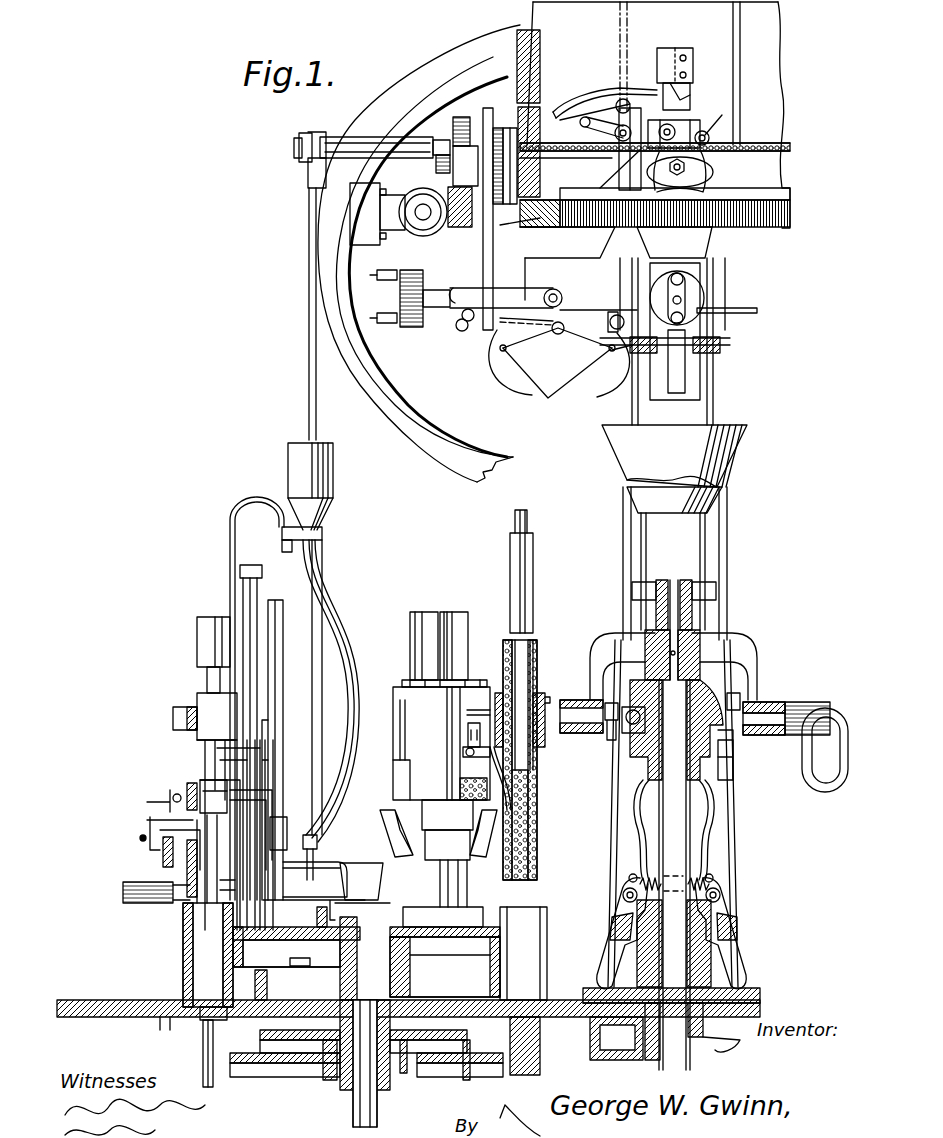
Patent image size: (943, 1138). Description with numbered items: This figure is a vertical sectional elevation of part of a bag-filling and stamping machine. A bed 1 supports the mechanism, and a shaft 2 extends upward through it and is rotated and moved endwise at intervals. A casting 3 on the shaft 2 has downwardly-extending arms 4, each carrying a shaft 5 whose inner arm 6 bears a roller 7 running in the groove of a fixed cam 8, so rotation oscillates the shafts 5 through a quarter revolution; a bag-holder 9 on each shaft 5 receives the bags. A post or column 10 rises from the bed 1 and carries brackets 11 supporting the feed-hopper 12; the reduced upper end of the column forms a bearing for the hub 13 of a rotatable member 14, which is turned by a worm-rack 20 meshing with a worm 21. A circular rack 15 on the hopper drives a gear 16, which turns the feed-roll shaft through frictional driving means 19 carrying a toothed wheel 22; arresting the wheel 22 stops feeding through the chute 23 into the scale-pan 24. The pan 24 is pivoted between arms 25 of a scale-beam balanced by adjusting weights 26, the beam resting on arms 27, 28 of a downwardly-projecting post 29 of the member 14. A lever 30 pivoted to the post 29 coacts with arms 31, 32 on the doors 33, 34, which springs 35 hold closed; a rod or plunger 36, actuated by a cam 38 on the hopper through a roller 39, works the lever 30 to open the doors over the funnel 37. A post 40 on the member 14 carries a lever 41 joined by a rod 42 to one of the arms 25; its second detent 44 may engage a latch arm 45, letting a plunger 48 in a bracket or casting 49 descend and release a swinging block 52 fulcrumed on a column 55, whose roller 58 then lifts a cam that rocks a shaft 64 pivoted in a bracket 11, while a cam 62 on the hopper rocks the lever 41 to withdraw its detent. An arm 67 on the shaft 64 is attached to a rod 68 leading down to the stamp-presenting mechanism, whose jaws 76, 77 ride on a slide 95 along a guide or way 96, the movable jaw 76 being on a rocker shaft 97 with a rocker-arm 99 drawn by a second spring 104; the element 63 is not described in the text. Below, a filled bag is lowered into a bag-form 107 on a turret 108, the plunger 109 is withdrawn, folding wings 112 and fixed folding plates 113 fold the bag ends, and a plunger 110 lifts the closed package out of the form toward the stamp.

The bed 1 is at (560, 1002).
The shaft 2 is at (672, 845).
The casting 3 is at (700, 647).
The downwardly-extending arms 4 is at (748, 702).
The shaft 5 is at (775, 715).
The arm 6 is at (733, 740).
The roller 7 is at (628, 690).
The fixed cam 8 is at (708, 692).
The bag-holder 9 is at (525, 753).
The post or column 10 is at (716, 410).
The brackets 11 is at (405, 437).
The feed-hopper 12 is at (768, 82).
The hub 13 is at (714, 252).
The rotatable member 14 is at (786, 205).
The circular rack 15 is at (775, 147).
The gear 16 is at (522, 156).
The frictional driving means 19 is at (500, 140).
The worm-rack 20 is at (775, 228).
The worm 21 is at (397, 235).
The toothed wheel 22 is at (705, 177).
The chute 23 is at (747, 289).
The scale-pan 24 is at (741, 362).
The arms 25 is at (505, 330).
The adjusting weights 26 is at (410, 318).
The laterally-projecting arm 27 is at (565, 305).
The laterally-projecting arm 28 is at (462, 317).
The downwardly-projecting post 29 is at (520, 226).
The lever 30 is at (470, 320).
The arm 31 is at (530, 360).
The arm 32 is at (590, 343).
The door or bottom 33 is at (520, 380).
The door or bottom 34 is at (600, 392).
The springs 35 is at (492, 370).
The rod or plunger 36 is at (618, 130).
The funnel 37 is at (720, 461).
The cam 38 is at (690, 118).
The roller 39 is at (626, 100).
The post 40 is at (618, 170).
The lever 41 is at (560, 118).
The rod 42 is at (632, 160).
The second detent 44 is at (712, 125).
The arm 45 is at (690, 82).
The plunger 48 is at (667, 92).
The bracket or casting 49 is at (676, 48).
The swinging block 52 is at (712, 146).
The upward projection or column 55 is at (705, 190).
The roller 58 is at (675, 175).
The cam 62 is at (572, 100).
The block 63 is at (722, 130).
The shaft 64 is at (299, 146).
The arm 67 is at (313, 163).
The rod 68 is at (308, 312).
The movable jaw 76 is at (215, 845).
The jaw 77 is at (212, 880).
The slide 95 is at (168, 896).
The guide or way 96 is at (160, 862).
The rocker shaft 97 is at (130, 903).
The rocker-arm 99 is at (168, 808).
The second spring 104 is at (140, 838).
The bag-forms 107 is at (552, 934).
The turret 108 is at (430, 955).
The plunger 109 is at (528, 618).
The plunger 110 is at (205, 1070).
The folding wings 112 is at (388, 832).
The fixed folding plates 113 is at (365, 892).